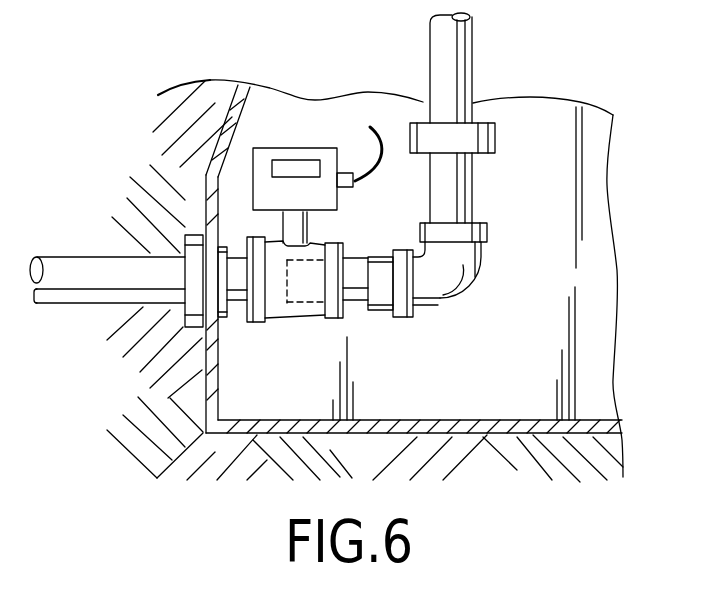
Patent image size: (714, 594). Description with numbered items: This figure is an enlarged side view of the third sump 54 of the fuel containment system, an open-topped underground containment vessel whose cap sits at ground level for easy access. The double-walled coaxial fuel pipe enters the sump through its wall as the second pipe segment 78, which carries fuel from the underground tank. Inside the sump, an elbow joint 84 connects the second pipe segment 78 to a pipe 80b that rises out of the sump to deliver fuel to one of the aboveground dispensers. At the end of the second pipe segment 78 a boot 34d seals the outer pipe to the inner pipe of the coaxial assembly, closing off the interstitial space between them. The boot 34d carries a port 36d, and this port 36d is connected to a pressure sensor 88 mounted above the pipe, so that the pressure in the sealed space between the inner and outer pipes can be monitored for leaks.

The third sump 54 is at (240, 116).
The second pipe segment 78 is at (97, 297).
The pipe 80b is at (463, 67).
The elbow joint 84 is at (450, 297).
The boot 34d is at (315, 308).
The port 36d is at (297, 233).
The pressure sensor 88 is at (277, 158).